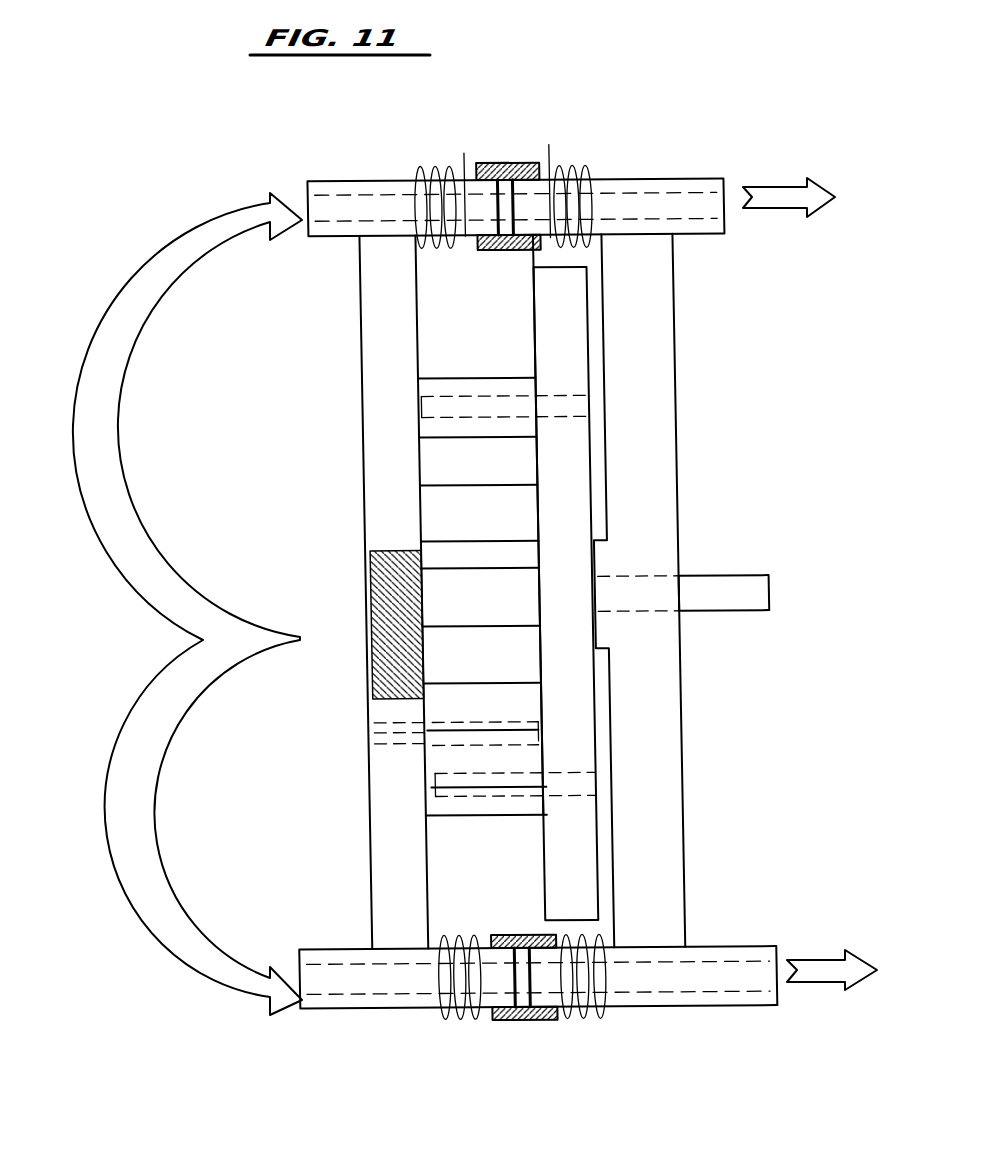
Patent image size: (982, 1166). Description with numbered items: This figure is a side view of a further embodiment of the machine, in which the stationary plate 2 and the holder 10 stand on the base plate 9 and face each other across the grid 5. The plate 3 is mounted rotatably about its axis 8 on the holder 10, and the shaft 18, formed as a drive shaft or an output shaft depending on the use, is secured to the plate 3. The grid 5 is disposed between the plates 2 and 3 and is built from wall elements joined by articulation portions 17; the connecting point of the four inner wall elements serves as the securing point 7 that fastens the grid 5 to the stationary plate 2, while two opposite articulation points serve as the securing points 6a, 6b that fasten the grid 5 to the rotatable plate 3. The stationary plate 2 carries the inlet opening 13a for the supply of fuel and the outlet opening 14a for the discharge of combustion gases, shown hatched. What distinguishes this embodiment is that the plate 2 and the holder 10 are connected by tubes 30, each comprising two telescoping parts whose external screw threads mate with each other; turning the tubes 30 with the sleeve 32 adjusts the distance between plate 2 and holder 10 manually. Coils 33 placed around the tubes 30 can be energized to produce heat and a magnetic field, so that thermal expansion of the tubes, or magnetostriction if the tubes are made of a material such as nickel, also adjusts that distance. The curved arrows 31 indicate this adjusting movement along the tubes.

The stationary plate 2 is at (392, 418).
The plate 3 is at (575, 332).
The grid 5 is at (467, 352).
The securing point 6a is at (588, 403).
The securing point 6b is at (597, 782).
The securing point 7 is at (372, 731).
The axis 8 is at (706, 590).
The base plate 9 is at (633, 178).
The holder 10 is at (655, 706).
The inlet opening 13a is at (358, 624).
The outlet opening 14a is at (382, 603).
The articulation portion 17 is at (508, 384).
The shaft 18 is at (696, 563).
The tube 30 is at (368, 180).
The movement arrow 31 is at (107, 448).
The sleeve 32 is at (504, 163).
The coil 33 is at (415, 180).